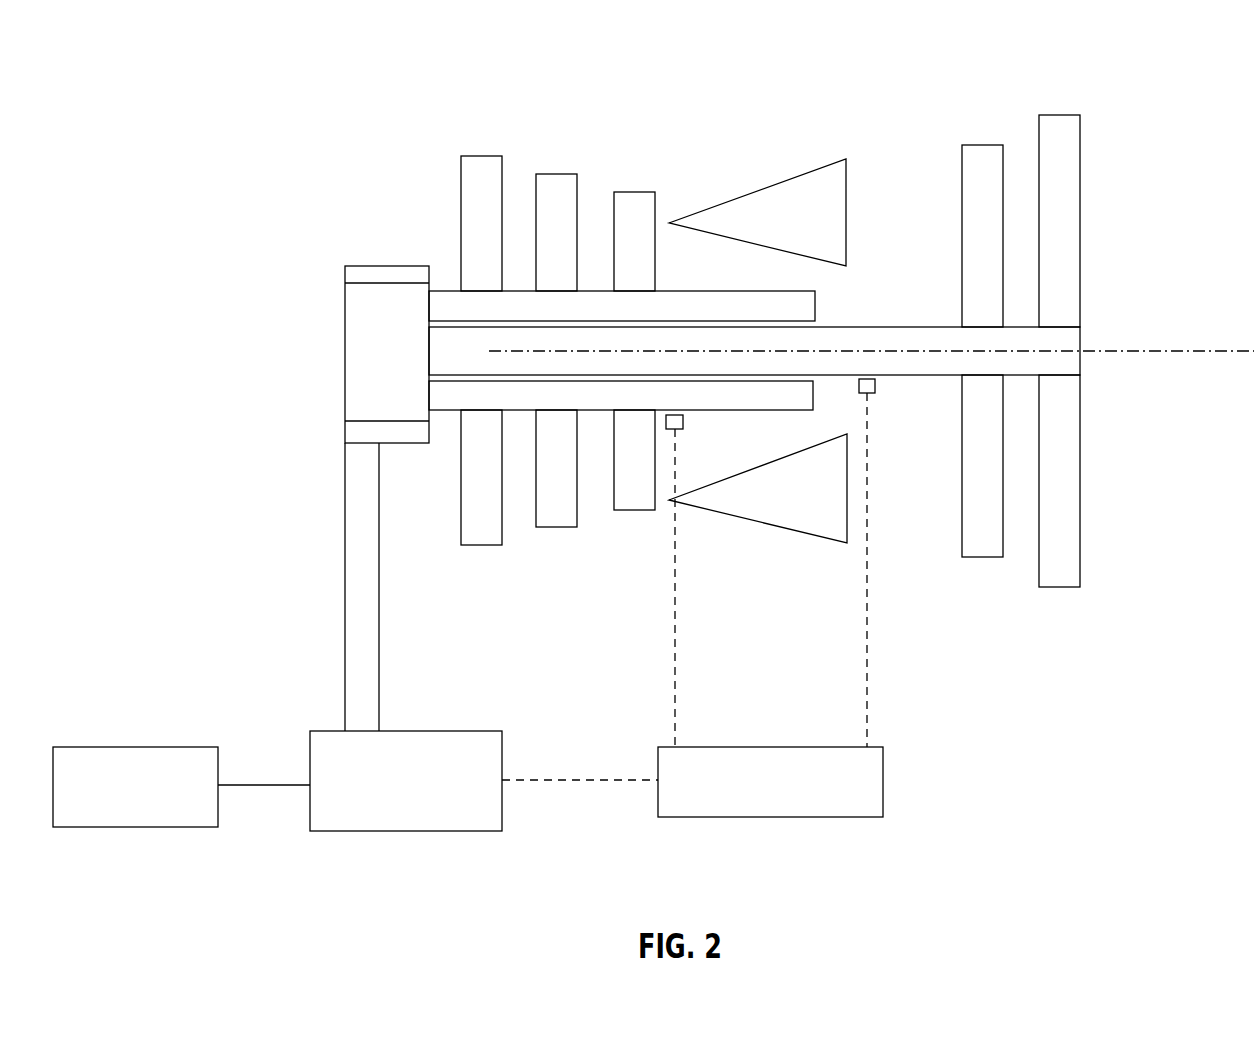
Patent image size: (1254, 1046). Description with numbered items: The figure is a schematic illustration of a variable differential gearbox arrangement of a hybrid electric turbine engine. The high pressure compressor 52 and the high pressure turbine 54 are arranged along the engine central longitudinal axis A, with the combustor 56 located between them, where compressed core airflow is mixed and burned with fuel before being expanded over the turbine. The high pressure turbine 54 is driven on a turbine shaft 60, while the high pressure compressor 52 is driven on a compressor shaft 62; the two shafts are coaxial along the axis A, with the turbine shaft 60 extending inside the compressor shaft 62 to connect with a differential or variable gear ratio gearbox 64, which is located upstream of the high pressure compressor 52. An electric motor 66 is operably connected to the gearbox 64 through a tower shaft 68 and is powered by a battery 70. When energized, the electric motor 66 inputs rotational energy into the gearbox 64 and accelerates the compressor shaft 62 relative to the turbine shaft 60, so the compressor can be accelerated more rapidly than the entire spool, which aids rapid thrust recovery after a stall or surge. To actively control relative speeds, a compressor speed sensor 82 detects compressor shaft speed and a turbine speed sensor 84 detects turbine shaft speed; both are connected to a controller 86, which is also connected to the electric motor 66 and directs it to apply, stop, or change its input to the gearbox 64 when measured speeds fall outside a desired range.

The high pressure compressor 52 is at (589, 123).
The high pressure turbine 54 is at (1026, 110).
The combustor 56 is at (766, 200).
The turbine shaft 60 is at (925, 353).
The compressor shaft 62 is at (708, 395).
The gearbox 64 is at (355, 353).
The electric motor 66 is at (394, 816).
The tower shaft 68 is at (358, 636).
The battery 70 is at (125, 817).
The compressor speed sensor 82 is at (678, 432).
The turbine speed sensor 84 is at (867, 378).
The controller 86 is at (770, 820).
The engine central longitudinal axis A is at (1122, 352).